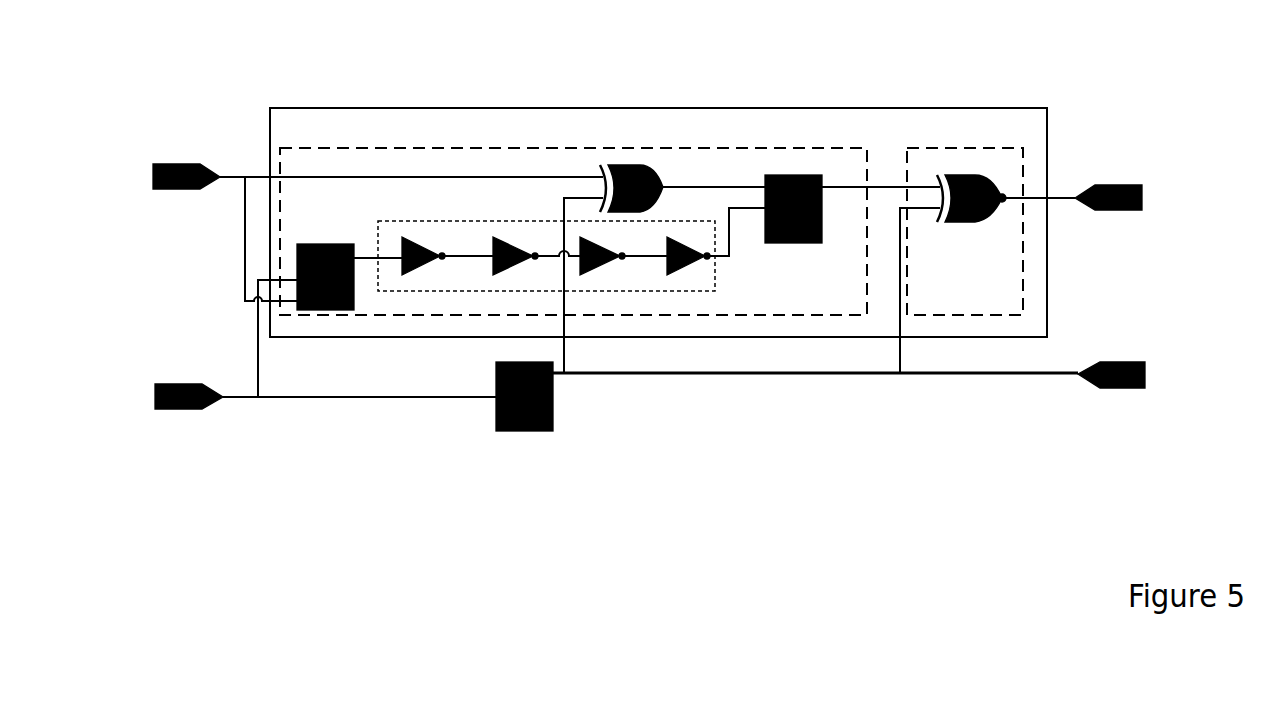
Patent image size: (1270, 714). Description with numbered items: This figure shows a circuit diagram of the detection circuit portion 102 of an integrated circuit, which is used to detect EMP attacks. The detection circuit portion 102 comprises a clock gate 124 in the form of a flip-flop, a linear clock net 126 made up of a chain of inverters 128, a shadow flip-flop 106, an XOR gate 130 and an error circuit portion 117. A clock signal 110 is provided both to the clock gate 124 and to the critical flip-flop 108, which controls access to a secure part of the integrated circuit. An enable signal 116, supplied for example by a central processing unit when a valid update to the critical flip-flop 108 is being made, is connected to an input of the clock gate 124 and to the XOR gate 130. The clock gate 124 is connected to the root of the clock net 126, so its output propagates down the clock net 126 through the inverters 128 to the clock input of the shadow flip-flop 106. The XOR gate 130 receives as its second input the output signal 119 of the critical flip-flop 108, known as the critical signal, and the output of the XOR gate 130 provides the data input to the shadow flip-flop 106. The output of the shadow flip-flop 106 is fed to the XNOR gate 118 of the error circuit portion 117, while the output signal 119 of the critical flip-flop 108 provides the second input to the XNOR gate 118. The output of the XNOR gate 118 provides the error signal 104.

The detection circuit portion 102 is at (393, 106).
The error signal 104 is at (1099, 198).
The shadow flip-flop 106 is at (792, 175).
The critical flip-flop 108 is at (518, 433).
The clock signal 110 is at (295, 347).
The enable signal 116 is at (349, 232).
The error circuit portion 117 is at (1007, 145).
The XNOR gate 118 is at (942, 175).
The output signal 119 is at (823, 410).
The clock gate 124 is at (318, 245).
The clock net 126 is at (433, 293).
The inverters 128 is at (667, 273).
The XOR gate 130 is at (615, 165).